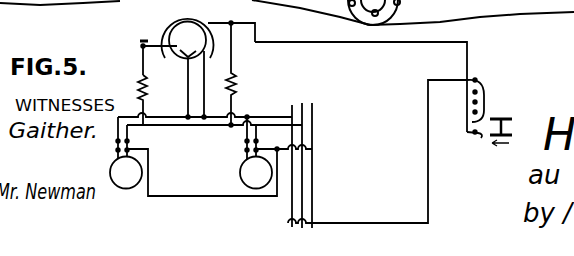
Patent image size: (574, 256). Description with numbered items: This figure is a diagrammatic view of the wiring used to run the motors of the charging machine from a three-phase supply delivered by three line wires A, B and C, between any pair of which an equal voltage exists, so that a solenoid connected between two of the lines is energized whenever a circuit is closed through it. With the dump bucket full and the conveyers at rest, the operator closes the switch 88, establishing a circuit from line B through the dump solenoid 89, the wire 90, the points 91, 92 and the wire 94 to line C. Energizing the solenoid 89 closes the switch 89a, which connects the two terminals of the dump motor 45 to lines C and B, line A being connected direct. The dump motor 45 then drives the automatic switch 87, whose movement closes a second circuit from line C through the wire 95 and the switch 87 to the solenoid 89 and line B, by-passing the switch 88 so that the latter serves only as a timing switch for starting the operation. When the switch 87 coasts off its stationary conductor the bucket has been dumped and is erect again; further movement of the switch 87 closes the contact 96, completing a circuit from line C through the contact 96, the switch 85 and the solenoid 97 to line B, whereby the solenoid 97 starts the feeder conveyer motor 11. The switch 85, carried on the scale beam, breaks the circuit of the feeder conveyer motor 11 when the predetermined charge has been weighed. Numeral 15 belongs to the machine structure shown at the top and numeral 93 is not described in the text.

The feeder conveyer motor 11 is at (124, 186).
The dump motor 45 is at (240, 177).
The switch device 85 is at (146, 40).
The automatic switch 87 is at (227, 21).
The switch 88 is at (512, 122).
The dump solenoid 89 is at (238, 80).
The switch 89a is at (243, 147).
The wire 90 is at (385, 45).
The point 91 is at (468, 147).
The point 92 is at (475, 122).
The contacts 93 is at (478, 114).
The wire 94 is at (428, 123).
The wire 95 is at (205, 90).
The contact 96 is at (178, 69).
The solenoid 97 is at (136, 83).
The flange 15 is at (435, 5).
The line wire A is at (312, 194).
The line wire B is at (302, 177).
The line wire C is at (292, 163).